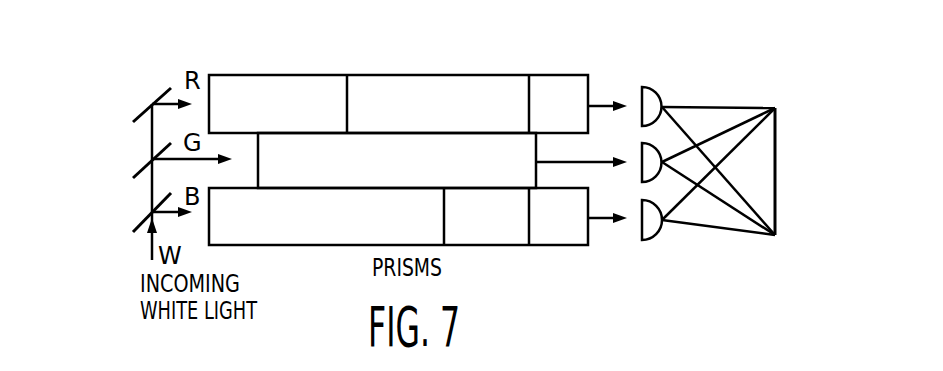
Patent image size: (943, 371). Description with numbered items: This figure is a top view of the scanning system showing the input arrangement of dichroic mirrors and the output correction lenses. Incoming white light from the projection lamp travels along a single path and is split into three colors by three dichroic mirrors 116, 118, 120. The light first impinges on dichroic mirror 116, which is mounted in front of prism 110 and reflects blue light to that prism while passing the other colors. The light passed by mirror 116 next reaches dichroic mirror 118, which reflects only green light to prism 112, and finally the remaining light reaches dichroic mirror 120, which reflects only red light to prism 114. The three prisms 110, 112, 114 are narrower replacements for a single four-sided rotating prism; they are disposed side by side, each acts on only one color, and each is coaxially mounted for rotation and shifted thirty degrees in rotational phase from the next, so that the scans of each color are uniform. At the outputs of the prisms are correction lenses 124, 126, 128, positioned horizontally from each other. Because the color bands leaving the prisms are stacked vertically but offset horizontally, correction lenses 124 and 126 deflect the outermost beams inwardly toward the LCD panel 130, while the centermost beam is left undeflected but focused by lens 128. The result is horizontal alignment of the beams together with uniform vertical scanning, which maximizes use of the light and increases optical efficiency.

The prism 110 is at (325, 245).
The prism 112 is at (325, 188).
The prism 114 is at (323, 75).
The dichroic mirror 116 is at (145, 218).
The dichroic mirror 118 is at (146, 164).
The dichroic mirror 120 is at (143, 110).
The correction lens 124 is at (650, 240).
The correction lens 126 is at (753, 57).
The correction lens 128 is at (643, 150).
The LCD panel 130 is at (777, 168).